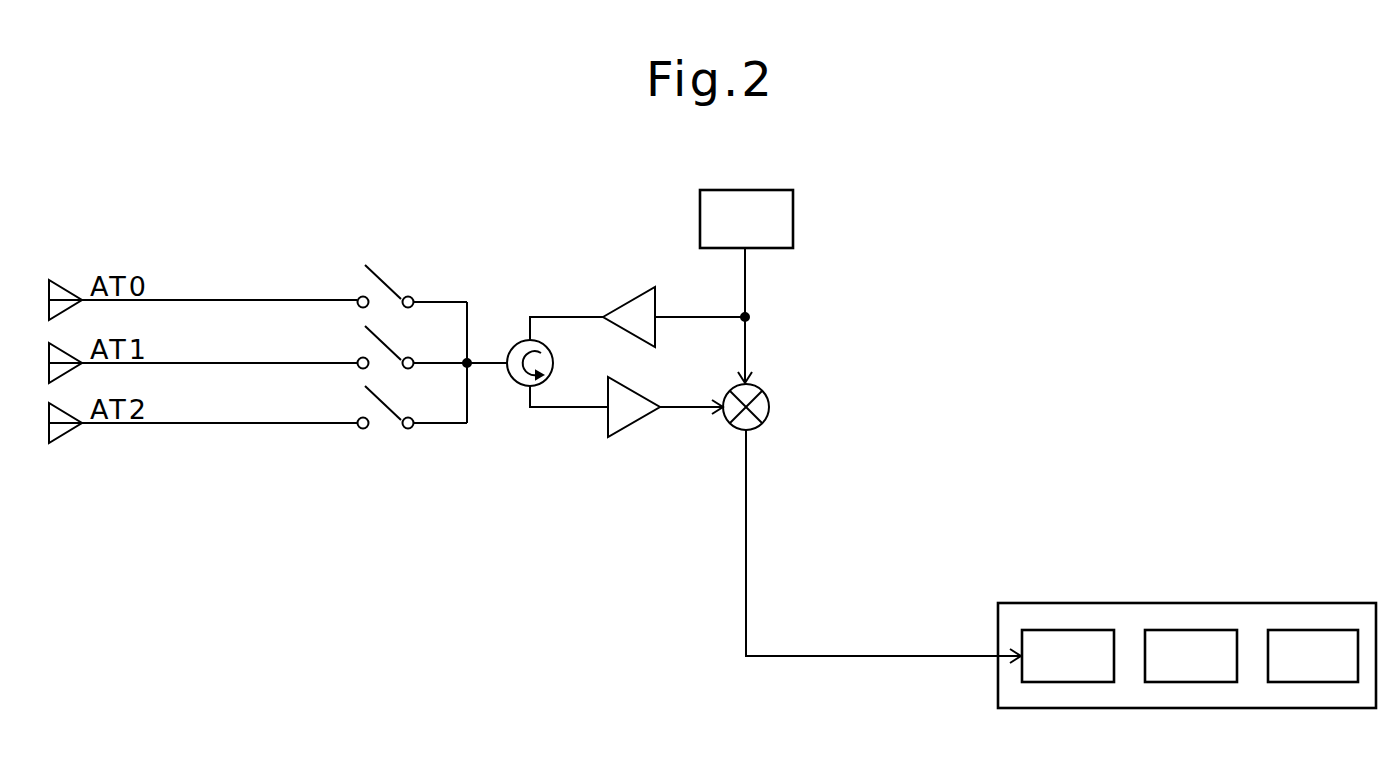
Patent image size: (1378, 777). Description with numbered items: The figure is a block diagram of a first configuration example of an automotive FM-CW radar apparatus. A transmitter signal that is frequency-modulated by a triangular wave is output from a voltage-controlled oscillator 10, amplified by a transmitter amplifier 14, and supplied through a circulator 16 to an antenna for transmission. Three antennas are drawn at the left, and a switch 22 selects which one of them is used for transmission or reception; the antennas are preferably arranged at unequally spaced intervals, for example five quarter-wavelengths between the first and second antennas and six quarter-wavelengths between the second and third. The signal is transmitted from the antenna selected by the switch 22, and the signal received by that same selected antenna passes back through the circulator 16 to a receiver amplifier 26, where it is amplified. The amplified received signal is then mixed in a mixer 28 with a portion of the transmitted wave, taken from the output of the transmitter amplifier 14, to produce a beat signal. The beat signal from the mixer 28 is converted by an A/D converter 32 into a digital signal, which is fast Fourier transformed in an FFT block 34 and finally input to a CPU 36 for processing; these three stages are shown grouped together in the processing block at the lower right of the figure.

The voltage-controlled oscillator (VCO) 10 is at (793, 233).
The transmitter amplifier 14 is at (636, 289).
The circulator 16 is at (511, 341).
The switch 22 is at (394, 244).
The receiver amplifier 26 is at (627, 434).
The mixer 28 is at (770, 407).
The A/D converter 32 is at (1092, 594).
The fast Fourier transform 34 is at (1208, 590).
The CPU 36 is at (1313, 629).